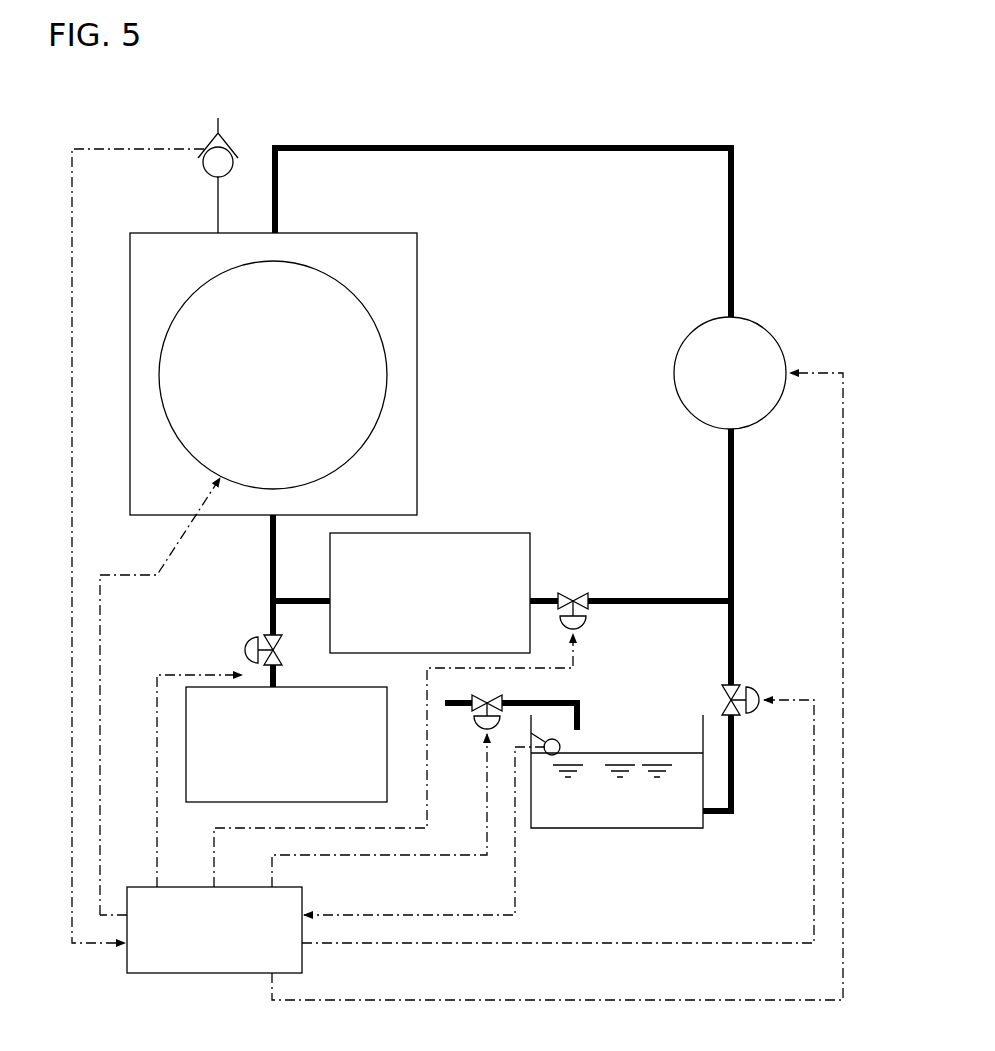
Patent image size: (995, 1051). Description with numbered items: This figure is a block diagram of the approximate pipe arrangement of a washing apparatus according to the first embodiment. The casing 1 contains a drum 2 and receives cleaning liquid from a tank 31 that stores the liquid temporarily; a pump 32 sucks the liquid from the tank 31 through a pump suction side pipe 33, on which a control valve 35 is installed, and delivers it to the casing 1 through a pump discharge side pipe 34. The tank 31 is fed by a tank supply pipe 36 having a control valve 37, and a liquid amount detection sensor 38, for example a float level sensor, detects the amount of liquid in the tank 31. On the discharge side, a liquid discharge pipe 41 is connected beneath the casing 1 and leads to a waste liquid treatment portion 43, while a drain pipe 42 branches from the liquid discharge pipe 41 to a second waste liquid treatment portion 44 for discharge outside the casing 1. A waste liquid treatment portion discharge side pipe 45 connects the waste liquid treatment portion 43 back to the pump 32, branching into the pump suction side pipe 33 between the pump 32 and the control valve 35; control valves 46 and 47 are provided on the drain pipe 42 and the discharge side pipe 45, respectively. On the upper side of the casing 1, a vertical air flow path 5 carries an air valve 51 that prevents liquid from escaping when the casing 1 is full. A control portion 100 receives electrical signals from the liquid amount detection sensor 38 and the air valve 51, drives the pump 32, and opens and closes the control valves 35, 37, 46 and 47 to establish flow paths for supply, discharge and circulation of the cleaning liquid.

The casing 1 is at (417, 262).
The drum 2 is at (354, 290).
The air flow path 5 is at (218, 205).
The air valve 51 is at (236, 148).
The tank 31 is at (608, 828).
The pump 32 is at (674, 372).
The pump suction side pipe 33 is at (735, 630).
The pump discharge side pipe 34 is at (731, 232).
The control valve 35 is at (722, 690).
The tank supply pipe 36 is at (580, 703).
The control valve 37 is at (482, 738).
The liquid amount detection sensor 38 is at (562, 746).
The liquid discharge pipe 41 is at (270, 548).
The drain pipe 42 is at (270, 618).
The waste liquid treatment portion 43 is at (474, 532).
The waste liquid treatment portion 44 is at (200, 803).
The waste liquid treatment portion discharge side pipe 45 is at (646, 600).
The control valve 46 is at (244, 650).
The control valve 47 is at (588, 592).
The control portion 100 is at (212, 974).